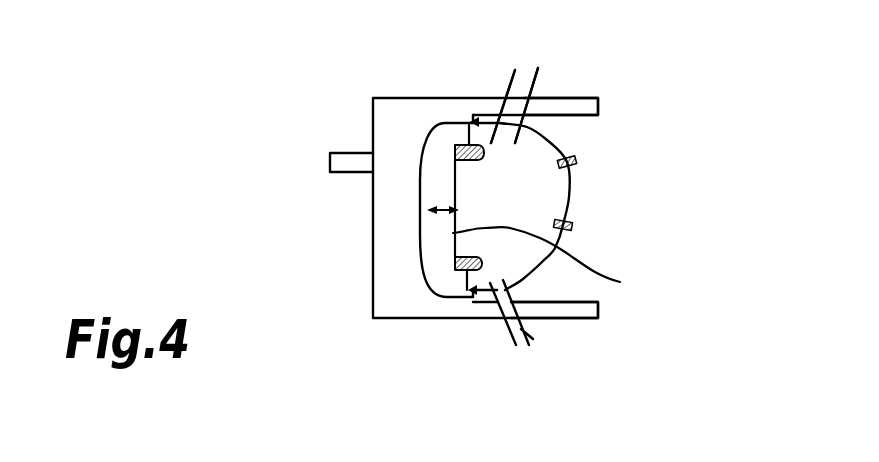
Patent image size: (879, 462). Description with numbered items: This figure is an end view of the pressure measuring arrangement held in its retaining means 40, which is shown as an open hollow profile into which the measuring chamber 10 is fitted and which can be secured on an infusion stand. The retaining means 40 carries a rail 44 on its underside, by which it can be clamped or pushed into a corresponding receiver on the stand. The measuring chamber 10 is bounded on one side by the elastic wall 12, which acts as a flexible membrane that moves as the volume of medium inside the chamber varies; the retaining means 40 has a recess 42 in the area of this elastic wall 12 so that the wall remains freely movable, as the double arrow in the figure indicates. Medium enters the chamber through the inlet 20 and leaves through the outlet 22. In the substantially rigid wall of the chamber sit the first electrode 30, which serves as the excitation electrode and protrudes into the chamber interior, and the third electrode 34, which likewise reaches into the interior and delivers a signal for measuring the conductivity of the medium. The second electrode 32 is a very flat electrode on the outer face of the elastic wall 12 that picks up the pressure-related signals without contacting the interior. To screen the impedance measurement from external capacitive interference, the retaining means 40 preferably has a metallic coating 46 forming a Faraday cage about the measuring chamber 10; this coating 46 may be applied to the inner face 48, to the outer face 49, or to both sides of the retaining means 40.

The measuring chamber 10 is at (542, 148).
The elastic wall 12 is at (455, 258).
The inlet 20 is at (533, 83).
The outlet 22 is at (527, 336).
The first electrode 30 is at (566, 225).
The second electrode 32 is at (620, 282).
The third electrode 34 is at (569, 163).
The retaining means 40 is at (395, 98).
The recess 42 is at (434, 249).
The rail 44 is at (346, 167).
The metallic coating 46 is at (577, 106).
The inner face 48 is at (564, 298).
The outer face 49 is at (471, 93).